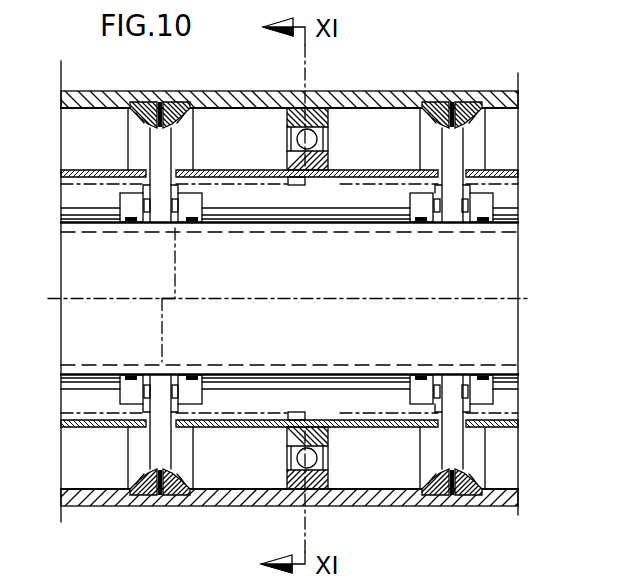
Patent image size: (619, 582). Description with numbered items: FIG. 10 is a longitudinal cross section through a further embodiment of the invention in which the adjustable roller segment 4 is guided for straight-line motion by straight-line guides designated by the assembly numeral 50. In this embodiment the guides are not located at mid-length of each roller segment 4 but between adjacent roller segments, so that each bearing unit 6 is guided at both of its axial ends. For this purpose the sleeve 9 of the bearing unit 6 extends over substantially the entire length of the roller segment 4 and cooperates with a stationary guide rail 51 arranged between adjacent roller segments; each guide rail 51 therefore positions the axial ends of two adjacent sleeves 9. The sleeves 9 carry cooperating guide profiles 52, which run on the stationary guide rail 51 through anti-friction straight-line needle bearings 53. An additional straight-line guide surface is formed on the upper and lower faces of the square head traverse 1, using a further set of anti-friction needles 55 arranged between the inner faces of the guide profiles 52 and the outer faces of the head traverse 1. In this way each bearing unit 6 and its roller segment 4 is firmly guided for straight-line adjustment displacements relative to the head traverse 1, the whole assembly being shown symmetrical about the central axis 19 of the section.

The square head traverse 1 is at (325, 230).
The roller segment 4 is at (218, 91).
The bearing unit 6 is at (355, 147).
The sleeve 9 is at (291, 188).
The axis 19 is at (300, 300).
The straight-line guides 50 is at (105, 143).
The stationary guide rail 51 is at (163, 378).
The guide profile 52 is at (203, 210).
The anti-friction straight-line needle bearings 53 is at (167, 208).
The anti-friction needles 55 is at (174, 209).